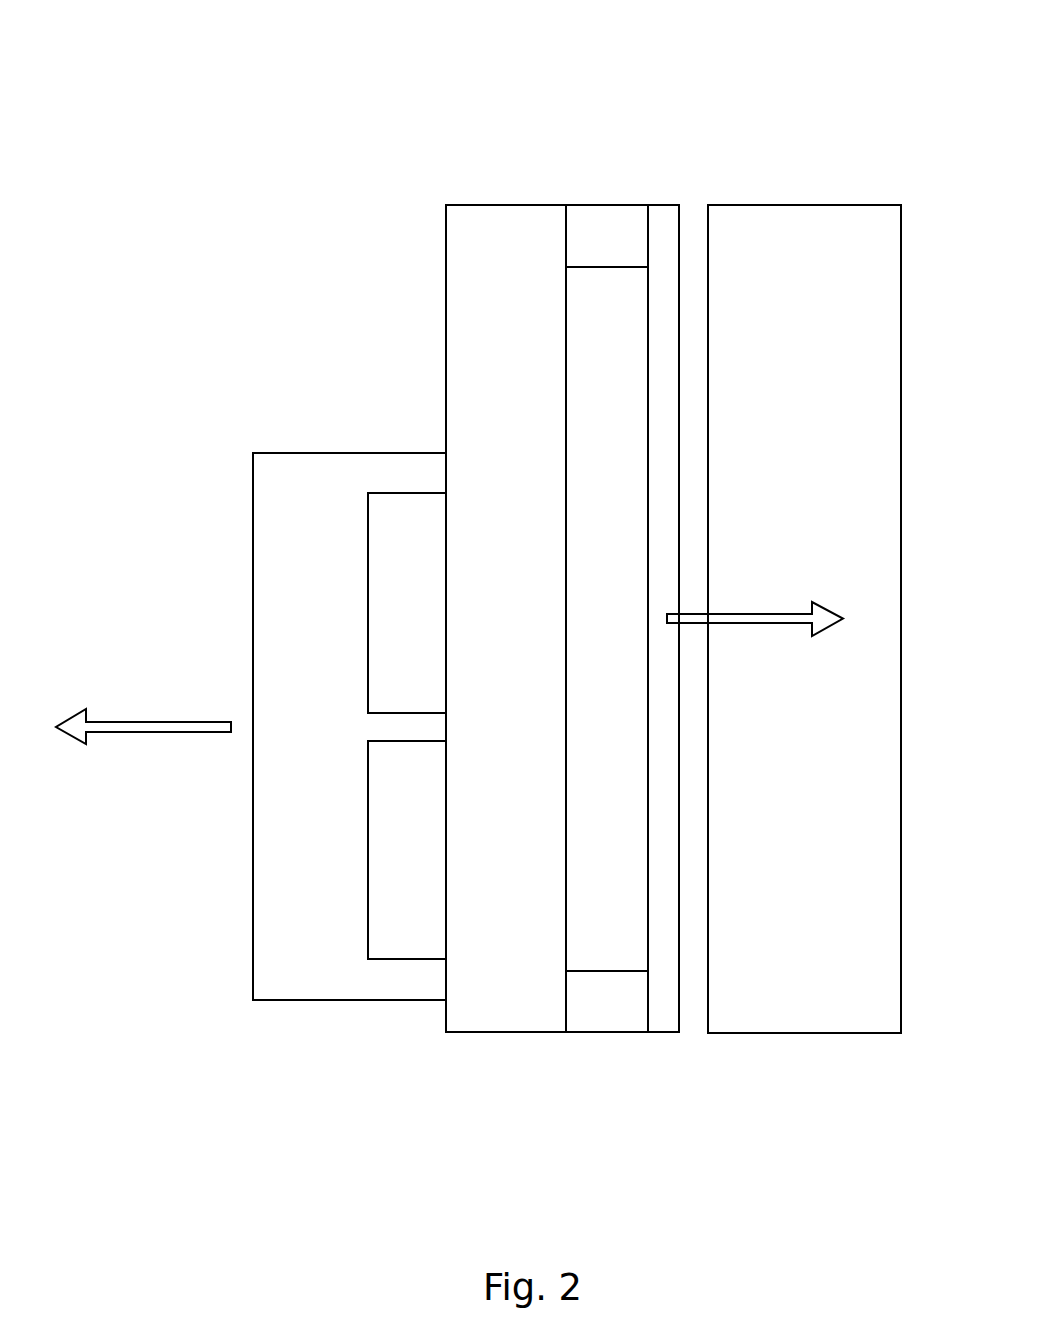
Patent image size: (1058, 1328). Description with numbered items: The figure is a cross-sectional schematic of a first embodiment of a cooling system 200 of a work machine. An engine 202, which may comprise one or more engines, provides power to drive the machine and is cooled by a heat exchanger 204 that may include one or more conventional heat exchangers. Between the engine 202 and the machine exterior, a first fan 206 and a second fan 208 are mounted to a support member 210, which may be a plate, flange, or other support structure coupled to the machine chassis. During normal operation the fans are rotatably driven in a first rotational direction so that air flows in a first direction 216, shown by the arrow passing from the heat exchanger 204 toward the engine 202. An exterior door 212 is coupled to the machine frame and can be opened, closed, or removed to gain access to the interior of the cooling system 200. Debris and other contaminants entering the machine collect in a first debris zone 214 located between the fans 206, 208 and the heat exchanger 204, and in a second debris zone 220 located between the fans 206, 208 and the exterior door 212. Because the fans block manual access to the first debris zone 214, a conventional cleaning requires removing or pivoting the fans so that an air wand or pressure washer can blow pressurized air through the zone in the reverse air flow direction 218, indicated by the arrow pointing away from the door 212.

The cooling system 200 is at (858, 125).
The engine 202 is at (805, 1033).
The heat exchanger 204 is at (608, 958).
The first fan 206 is at (382, 905).
The second fan 208 is at (408, 505).
The support member 210 is at (445, 1014).
The exterior door 212 is at (252, 515).
The first debris zone 214 is at (553, 250).
The first direction 216 is at (747, 612).
The reverse air flow direction 218 is at (153, 722).
The second debris zone 220 is at (281, 779).